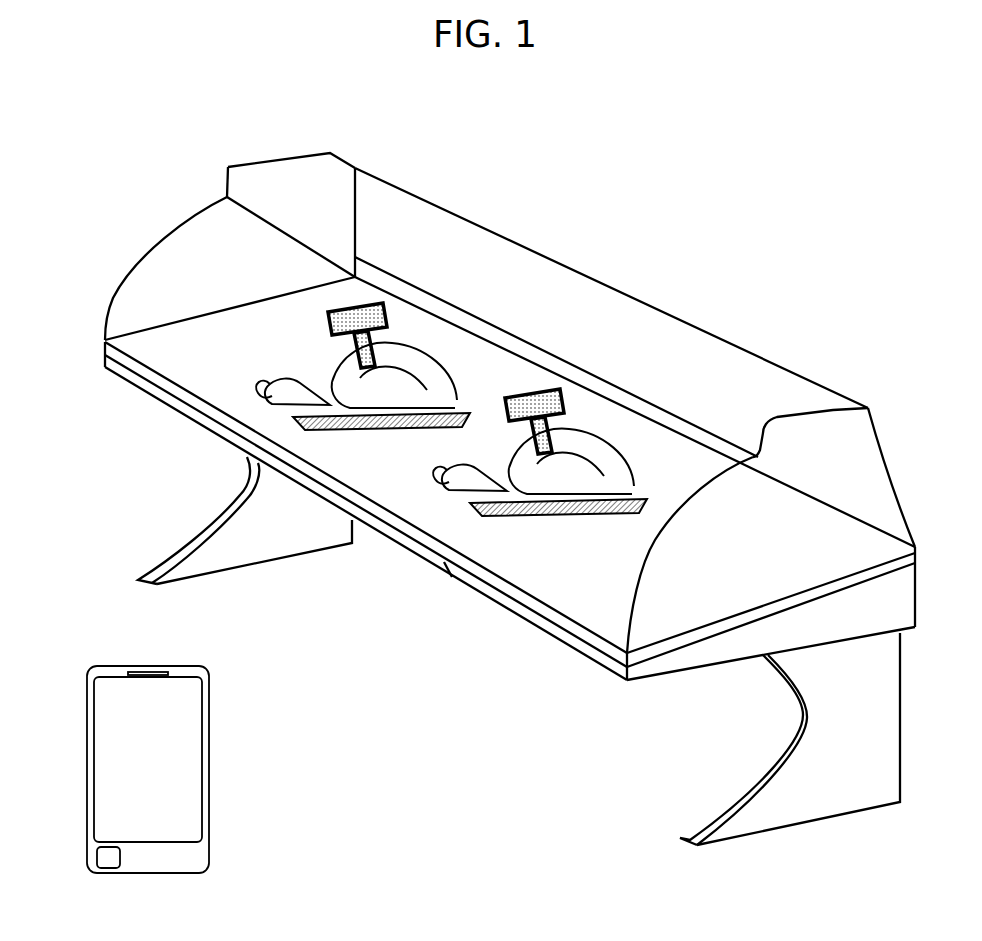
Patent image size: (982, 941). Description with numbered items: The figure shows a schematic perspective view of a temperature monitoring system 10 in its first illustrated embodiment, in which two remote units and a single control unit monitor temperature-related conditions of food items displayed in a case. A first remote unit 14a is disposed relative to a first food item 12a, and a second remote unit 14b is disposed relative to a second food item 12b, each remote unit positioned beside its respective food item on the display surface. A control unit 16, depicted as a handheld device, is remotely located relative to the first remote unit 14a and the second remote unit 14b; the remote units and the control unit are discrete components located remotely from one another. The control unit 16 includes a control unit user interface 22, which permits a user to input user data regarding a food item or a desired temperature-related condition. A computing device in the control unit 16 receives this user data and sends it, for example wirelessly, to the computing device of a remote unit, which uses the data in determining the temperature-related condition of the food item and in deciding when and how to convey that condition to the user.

The system 10 is at (66, 153).
The first food item 12a is at (430, 348).
The second food item 12b is at (608, 440).
The first remote unit 14a is at (372, 303).
The second remote unit 14b is at (540, 390).
The control unit 16 is at (46, 683).
The control unit user interface 22 is at (187, 772).